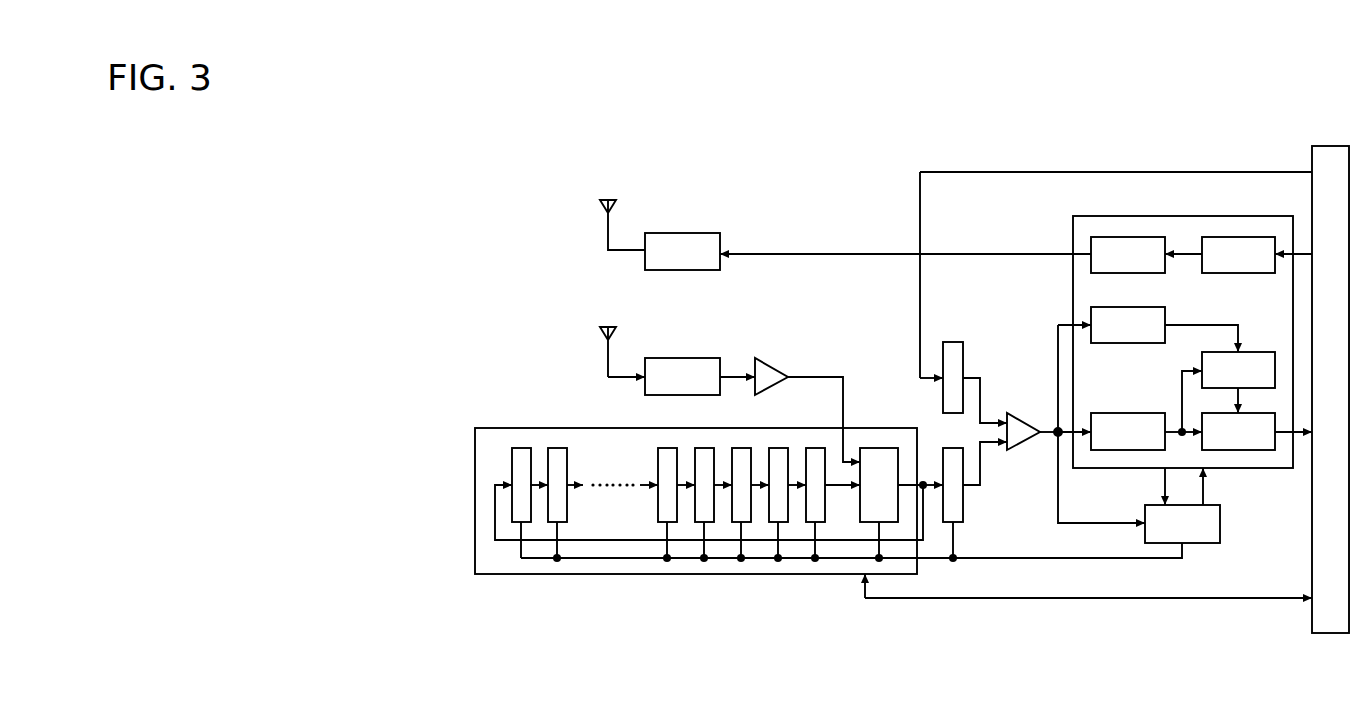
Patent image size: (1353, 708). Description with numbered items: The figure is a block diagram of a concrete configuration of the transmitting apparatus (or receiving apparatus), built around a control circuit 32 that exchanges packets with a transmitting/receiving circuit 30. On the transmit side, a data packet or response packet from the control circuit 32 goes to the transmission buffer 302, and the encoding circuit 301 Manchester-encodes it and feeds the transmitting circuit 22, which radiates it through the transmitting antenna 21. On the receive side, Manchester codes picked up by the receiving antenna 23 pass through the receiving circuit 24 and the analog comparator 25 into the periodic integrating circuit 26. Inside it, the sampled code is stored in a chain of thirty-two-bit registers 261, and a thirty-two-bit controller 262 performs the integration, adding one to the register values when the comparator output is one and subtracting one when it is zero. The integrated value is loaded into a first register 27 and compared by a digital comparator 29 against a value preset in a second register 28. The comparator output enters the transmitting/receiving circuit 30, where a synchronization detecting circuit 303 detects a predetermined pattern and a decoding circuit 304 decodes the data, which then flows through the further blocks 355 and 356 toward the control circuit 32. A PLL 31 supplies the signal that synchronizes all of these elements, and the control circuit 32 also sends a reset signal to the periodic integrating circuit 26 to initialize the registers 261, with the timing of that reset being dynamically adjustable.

The transmitting antenna 21 is at (612, 205).
The transmitting circuit 22 is at (680, 243).
The receiving antenna 23 is at (612, 330).
The receiving circuit 24 is at (676, 370).
The analog comparator 25 is at (770, 378).
The periodic integrating circuit 26 is at (699, 488).
The 32-bit registers 261 is at (811, 457).
The 32-bit controller 262 is at (888, 459).
The first register (32-bit) 27 is at (953, 452).
The second register (32-bit) 28 is at (953, 344).
The digital comparator 29 is at (1012, 429).
The transmitting/receiving circuit 30 is at (1192, 328).
The encoding circuit 301 is at (1138, 267).
The transmission buffer 302 is at (1230, 267).
The synchronization detecting circuit 303 is at (1118, 310).
The decoding circuit 304 is at (1121, 418).
The control block 355 is at (1254, 352).
The control block 356 is at (1254, 414).
The PLL (Phase-Locked-Loop) 31 is at (1213, 526).
The control circuit 32 is at (1318, 165).